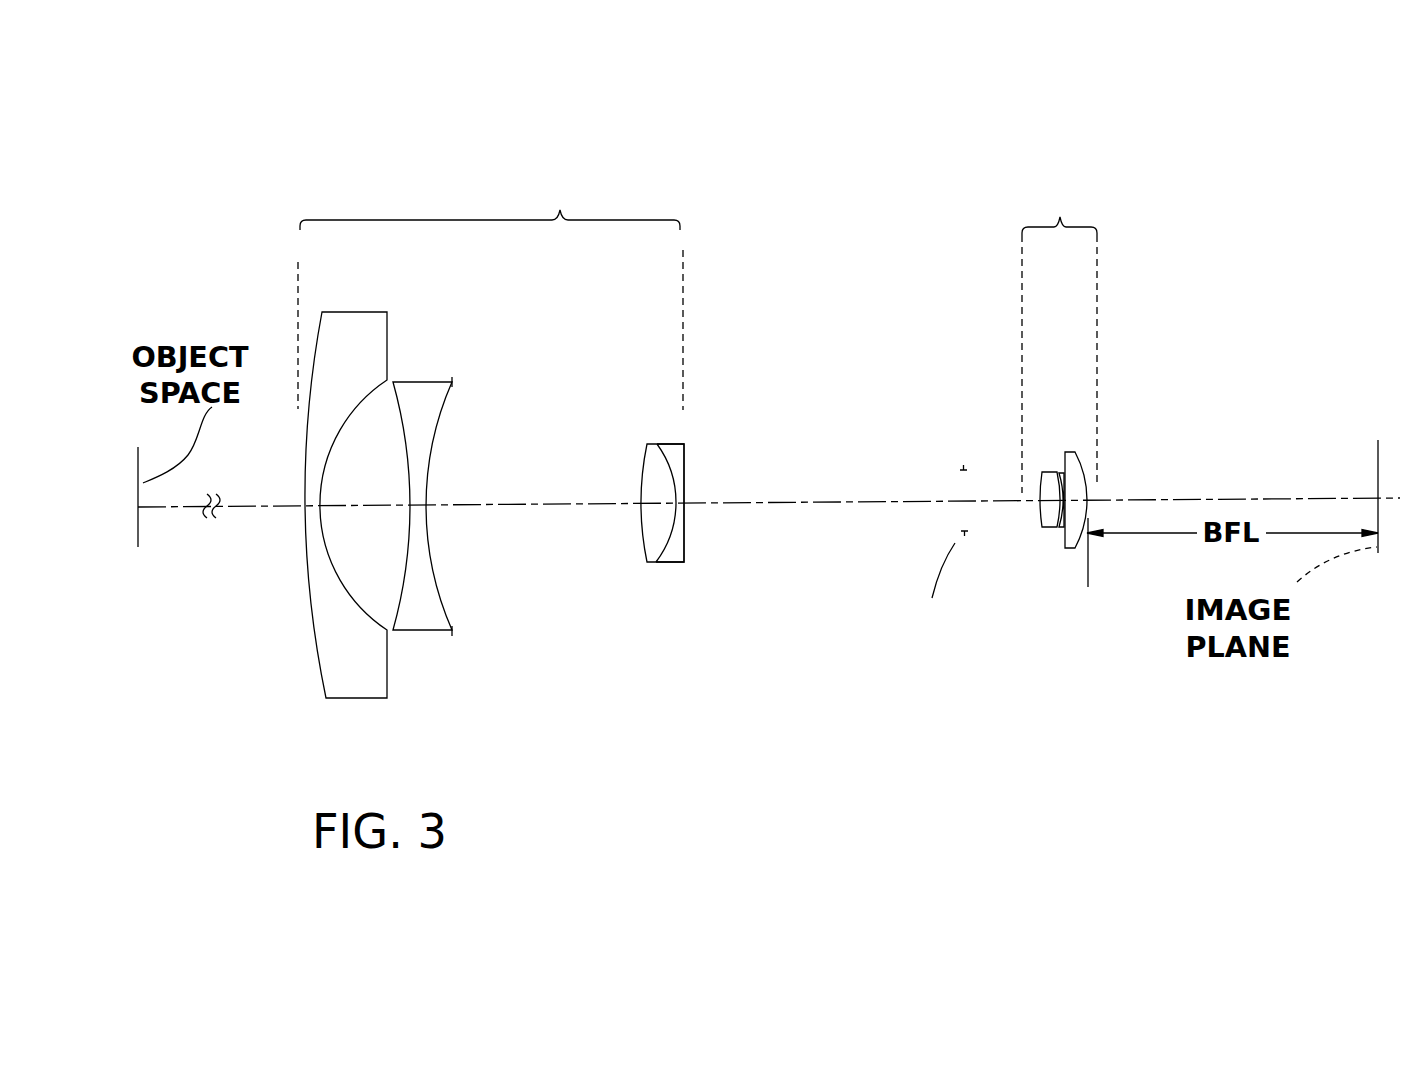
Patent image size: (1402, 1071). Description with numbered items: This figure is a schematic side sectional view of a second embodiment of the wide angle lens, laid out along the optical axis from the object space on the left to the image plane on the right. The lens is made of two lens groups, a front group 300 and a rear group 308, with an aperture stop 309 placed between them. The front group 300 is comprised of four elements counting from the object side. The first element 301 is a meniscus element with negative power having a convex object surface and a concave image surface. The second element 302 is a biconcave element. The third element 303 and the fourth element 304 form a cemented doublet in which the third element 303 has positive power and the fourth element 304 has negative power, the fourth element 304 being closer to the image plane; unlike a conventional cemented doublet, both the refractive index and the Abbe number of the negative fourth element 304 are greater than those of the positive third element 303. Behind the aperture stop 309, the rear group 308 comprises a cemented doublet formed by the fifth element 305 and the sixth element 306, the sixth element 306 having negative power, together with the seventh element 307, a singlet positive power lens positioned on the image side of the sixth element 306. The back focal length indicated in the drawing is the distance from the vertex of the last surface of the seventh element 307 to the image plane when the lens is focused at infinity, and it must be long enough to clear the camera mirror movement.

The front group 300 is at (655, 163).
The first element 301 is at (349, 300).
The second element 302 is at (431, 366).
The third element 303 is at (630, 480).
The fourth element 304 is at (695, 434).
The fifth element 305 is at (1028, 490).
The sixth element 306 is at (1052, 542).
The seventh element 307 is at (1097, 465).
The rear group 308 is at (1112, 138).
The aperture stop 309 is at (944, 545).